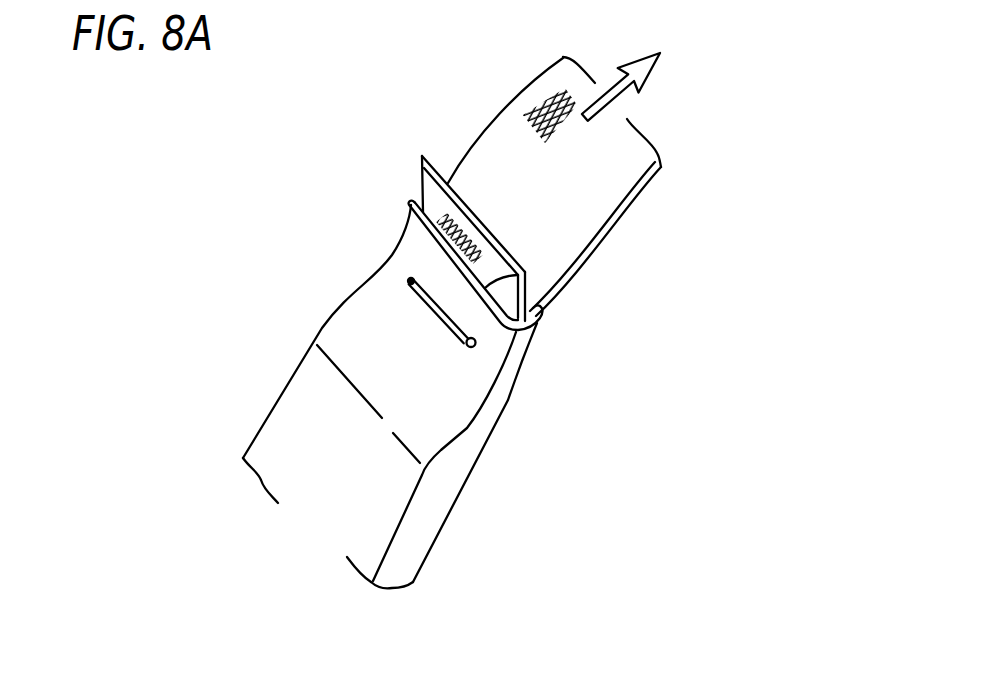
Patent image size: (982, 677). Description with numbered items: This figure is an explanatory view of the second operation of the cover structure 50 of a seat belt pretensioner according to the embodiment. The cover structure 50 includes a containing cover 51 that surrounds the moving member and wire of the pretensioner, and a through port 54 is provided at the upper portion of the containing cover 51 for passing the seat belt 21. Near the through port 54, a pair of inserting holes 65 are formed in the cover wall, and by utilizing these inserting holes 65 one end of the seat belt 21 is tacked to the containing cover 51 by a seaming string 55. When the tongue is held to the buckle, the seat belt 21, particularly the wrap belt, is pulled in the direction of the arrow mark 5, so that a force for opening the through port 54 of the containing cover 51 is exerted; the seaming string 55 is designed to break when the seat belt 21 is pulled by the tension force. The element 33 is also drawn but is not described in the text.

The arrow mark 5 is at (621, 74).
The seat belt 21 is at (632, 155).
The engaging tongue 33 is at (427, 155).
The cover structure 50 is at (262, 329).
The containing cover 51 is at (273, 437).
The through port 54 is at (485, 288).
The seaming string 55 is at (442, 317).
The inserting holes 65 is at (405, 280).